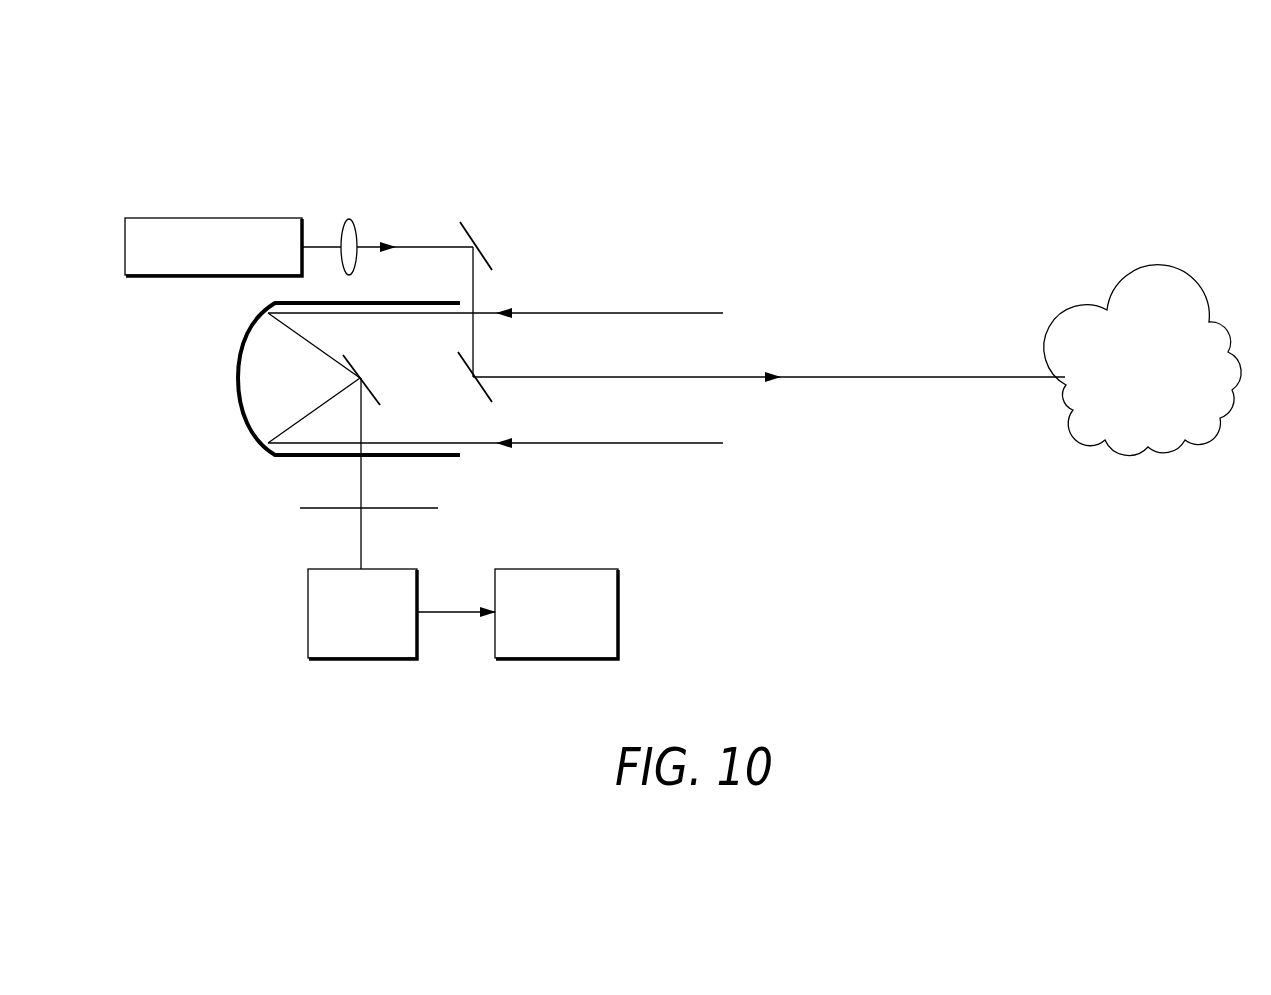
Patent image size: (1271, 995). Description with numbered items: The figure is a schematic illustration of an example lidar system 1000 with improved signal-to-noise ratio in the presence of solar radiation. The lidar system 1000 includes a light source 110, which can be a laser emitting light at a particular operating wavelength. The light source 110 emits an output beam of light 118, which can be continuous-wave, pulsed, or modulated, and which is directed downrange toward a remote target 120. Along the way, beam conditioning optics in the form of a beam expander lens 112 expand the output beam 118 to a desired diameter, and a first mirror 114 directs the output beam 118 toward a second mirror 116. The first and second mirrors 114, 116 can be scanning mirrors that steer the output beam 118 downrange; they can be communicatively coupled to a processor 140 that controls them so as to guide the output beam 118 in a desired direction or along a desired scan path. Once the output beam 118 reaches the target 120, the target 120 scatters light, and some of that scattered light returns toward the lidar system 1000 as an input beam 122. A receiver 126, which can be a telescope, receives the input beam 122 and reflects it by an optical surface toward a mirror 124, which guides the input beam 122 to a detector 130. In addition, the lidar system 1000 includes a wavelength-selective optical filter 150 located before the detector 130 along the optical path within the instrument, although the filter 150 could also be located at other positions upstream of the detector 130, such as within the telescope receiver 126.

The lidar system 1000 is at (665, 133).
The light source 110 is at (235, 217).
The beam expander lens 112 is at (357, 231).
The first mirror 114 is at (478, 235).
The second mirror 116 is at (490, 388).
The output beam of light 118 is at (845, 377).
The target 120 is at (1123, 302).
The input beam 122 is at (668, 313).
The mirror 124 is at (353, 362).
The receiver 126 is at (238, 364).
The detector 130 is at (308, 596).
The processor 140 is at (618, 634).
The wavelength-selective optical filter 150 is at (320, 507).